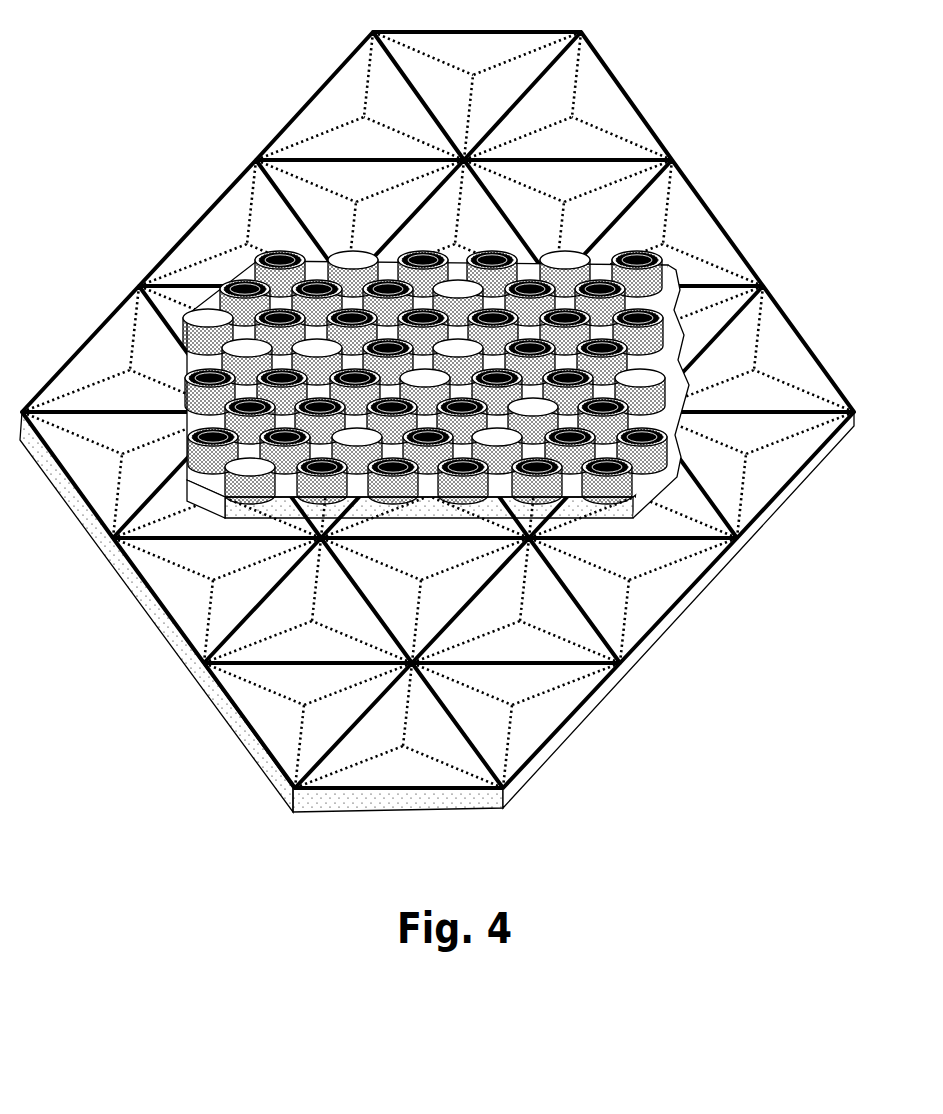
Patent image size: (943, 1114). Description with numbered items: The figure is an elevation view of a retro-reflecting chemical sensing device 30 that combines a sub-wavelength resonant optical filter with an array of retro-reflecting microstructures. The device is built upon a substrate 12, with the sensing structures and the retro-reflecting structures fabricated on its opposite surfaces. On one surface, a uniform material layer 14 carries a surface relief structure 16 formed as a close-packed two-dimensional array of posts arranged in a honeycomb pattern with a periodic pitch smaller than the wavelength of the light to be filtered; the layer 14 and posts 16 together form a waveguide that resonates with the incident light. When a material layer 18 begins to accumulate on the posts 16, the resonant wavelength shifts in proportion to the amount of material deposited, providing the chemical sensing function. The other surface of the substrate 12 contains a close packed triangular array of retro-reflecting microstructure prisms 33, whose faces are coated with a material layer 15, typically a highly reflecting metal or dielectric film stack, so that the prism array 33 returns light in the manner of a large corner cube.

The chemical sensing device 30 is at (153, 78).
The substrate 12 is at (703, 590).
The material layer 15 is at (532, 728).
The retro-reflecting microstructure prisms 33 is at (573, 110).
The uniform material layer 14 is at (250, 507).
The surface relief structure 16 is at (195, 333).
The material layer 18 is at (642, 250).